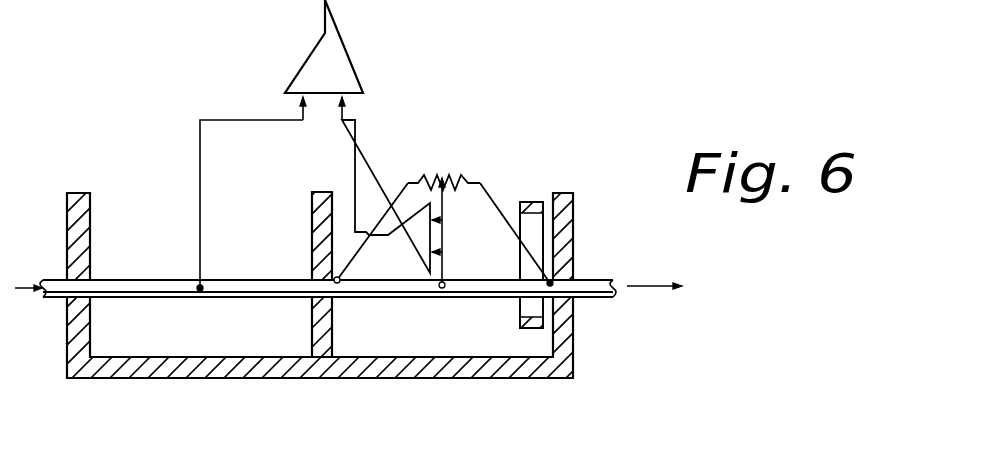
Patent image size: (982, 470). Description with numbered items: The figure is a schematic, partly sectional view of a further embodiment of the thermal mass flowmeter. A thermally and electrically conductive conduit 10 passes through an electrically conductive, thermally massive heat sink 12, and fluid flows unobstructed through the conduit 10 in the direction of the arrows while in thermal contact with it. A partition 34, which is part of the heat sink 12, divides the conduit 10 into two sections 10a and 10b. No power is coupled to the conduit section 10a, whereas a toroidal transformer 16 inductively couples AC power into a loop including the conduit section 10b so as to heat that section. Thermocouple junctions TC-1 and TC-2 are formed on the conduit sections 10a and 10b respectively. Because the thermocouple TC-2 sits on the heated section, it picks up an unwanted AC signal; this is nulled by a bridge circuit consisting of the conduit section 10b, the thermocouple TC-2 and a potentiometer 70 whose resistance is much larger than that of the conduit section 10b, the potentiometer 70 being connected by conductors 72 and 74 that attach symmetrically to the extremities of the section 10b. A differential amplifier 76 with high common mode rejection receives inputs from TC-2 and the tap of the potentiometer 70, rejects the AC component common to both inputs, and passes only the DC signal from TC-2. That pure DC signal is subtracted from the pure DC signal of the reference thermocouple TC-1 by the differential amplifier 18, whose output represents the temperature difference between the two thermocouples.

The conduit 10 is at (582, 270).
The conduit section 10a is at (157, 289).
The conduit section 10b is at (383, 295).
The heat sink 12 is at (60, 362).
The toroidal transformer 16 is at (520, 327).
The differential amplifier 18 is at (340, 54).
The partition 34 is at (312, 330).
The potentiometer 70 is at (460, 175).
The conductor 72 is at (396, 197).
The conductor 74 is at (485, 192).
The differential amplifier 76 is at (417, 257).
The thermocouple junction TC-1 is at (203, 286).
The thermocouple junction TC-2 is at (444, 283).